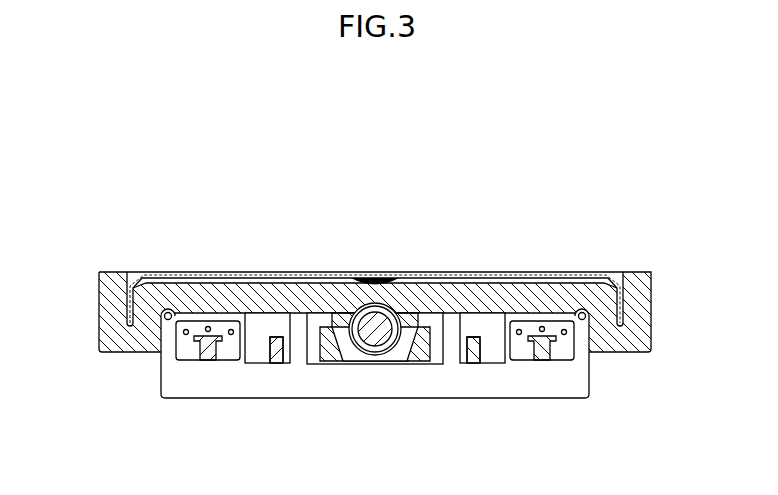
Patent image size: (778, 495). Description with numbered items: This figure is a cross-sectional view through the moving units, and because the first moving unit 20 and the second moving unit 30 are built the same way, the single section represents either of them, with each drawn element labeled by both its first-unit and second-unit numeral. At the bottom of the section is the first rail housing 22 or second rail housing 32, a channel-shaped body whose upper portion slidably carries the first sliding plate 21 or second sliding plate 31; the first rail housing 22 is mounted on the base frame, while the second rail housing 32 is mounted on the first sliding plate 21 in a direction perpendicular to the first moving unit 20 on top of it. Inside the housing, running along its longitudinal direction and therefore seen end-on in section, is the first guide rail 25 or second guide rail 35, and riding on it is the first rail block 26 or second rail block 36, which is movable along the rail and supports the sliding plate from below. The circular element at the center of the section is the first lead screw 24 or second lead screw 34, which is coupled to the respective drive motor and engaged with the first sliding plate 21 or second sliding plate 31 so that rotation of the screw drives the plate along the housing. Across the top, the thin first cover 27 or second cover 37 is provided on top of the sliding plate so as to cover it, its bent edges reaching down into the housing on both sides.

The first moving unit 20 is at (363, 345).
The second moving unit 30 is at (146, 401).
The first sliding plate 21 is at (392, 349).
The second sliding plate 31 is at (626, 343).
The first rail housing 22 is at (375, 385).
The second rail housing 32 is at (474, 383).
The first lead screw 24 is at (379, 379).
The second lead screw 34 is at (377, 330).
The first guide rail 25 is at (369, 391).
The second guide rail 35 is at (190, 352).
The first rail block 26 is at (375, 385).
The second rail block 36 is at (233, 345).
The first cover 27 is at (406, 277).
The second cover 37 is at (621, 325).